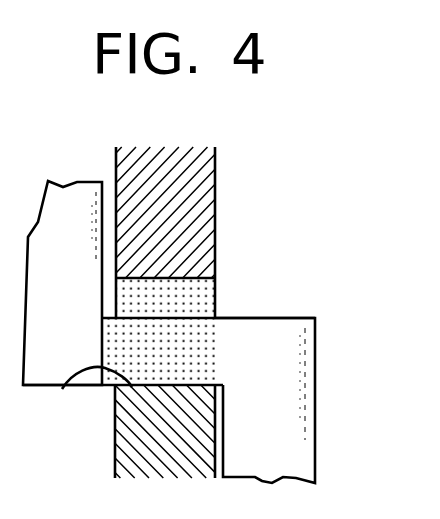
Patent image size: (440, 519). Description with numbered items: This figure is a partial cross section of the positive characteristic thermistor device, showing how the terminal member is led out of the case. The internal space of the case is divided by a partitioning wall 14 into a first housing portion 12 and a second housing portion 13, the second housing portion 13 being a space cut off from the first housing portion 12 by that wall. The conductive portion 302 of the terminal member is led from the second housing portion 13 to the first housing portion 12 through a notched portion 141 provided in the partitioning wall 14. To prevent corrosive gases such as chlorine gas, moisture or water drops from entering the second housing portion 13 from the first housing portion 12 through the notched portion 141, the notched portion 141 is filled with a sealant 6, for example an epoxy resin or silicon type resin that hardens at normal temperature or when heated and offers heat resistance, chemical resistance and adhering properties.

The second housing portion 13 is at (94, 171).
The first housing portion 12 is at (263, 171).
The partitioning wall 14 is at (197, 200).
The sealant 6 is at (208, 293).
The notched portion 141 is at (64, 386).
The conductive portion 302 is at (297, 404).